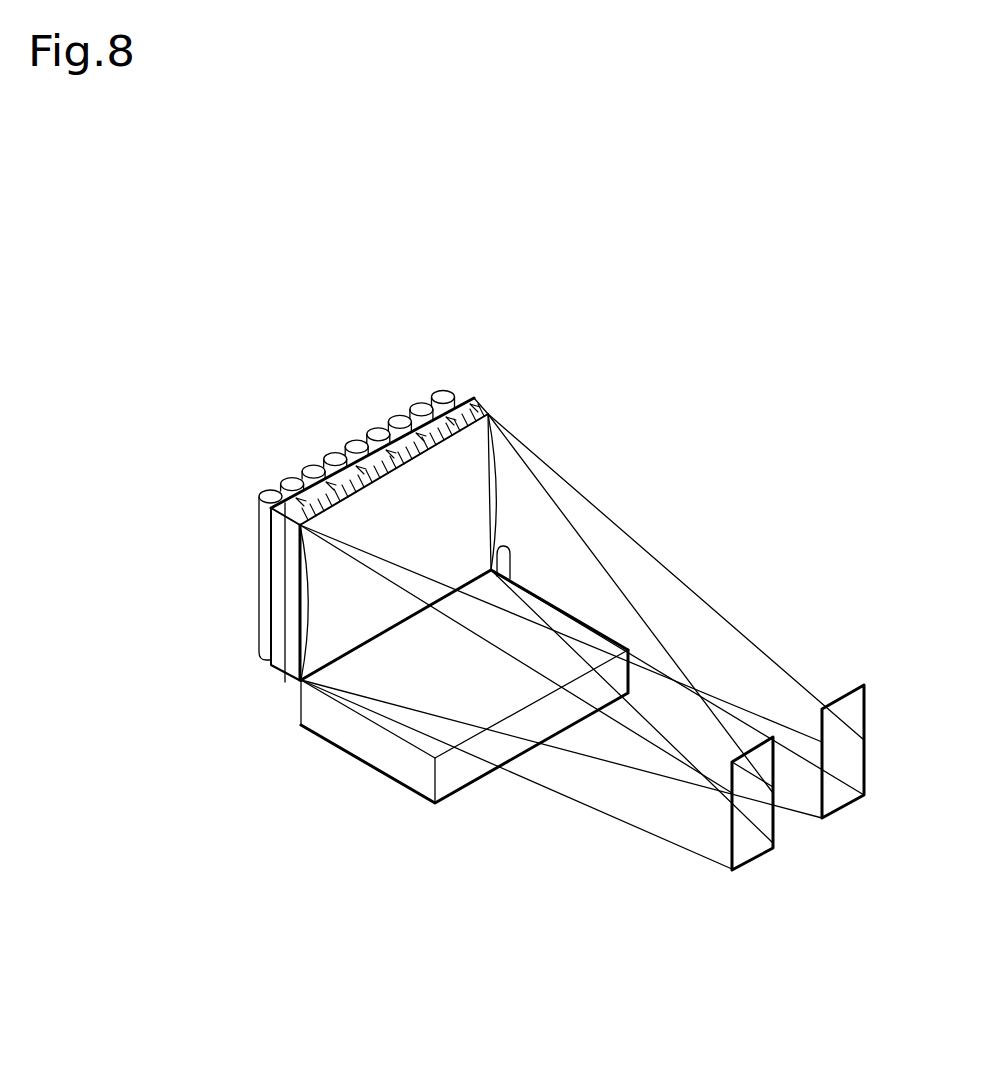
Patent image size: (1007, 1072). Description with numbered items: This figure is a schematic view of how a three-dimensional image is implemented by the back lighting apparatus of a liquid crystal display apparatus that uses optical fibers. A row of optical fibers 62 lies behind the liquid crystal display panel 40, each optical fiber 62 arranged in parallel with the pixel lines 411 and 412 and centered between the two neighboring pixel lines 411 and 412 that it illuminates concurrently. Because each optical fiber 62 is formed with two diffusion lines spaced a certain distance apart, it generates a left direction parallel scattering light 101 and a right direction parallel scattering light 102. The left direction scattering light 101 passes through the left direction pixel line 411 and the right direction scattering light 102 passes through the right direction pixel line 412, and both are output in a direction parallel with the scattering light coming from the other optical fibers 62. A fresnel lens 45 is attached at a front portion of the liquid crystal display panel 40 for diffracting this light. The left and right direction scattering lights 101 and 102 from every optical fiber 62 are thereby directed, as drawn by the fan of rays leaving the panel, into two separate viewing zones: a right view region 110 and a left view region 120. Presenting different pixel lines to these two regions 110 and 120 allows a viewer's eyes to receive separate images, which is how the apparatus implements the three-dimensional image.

The liquid crystal display panel 40 is at (258, 663).
The fresnel lens 45 is at (300, 640).
The optical fiber 62 is at (290, 480).
The left direction parallel scattering light 101 is at (422, 428).
The right direction parallel scattering light 102 is at (388, 424).
The right view region 110 is at (845, 808).
The left view region 120 is at (757, 858).
The left direction pixel line 411 is at (488, 412).
The right direction pixel line 412 is at (470, 400).